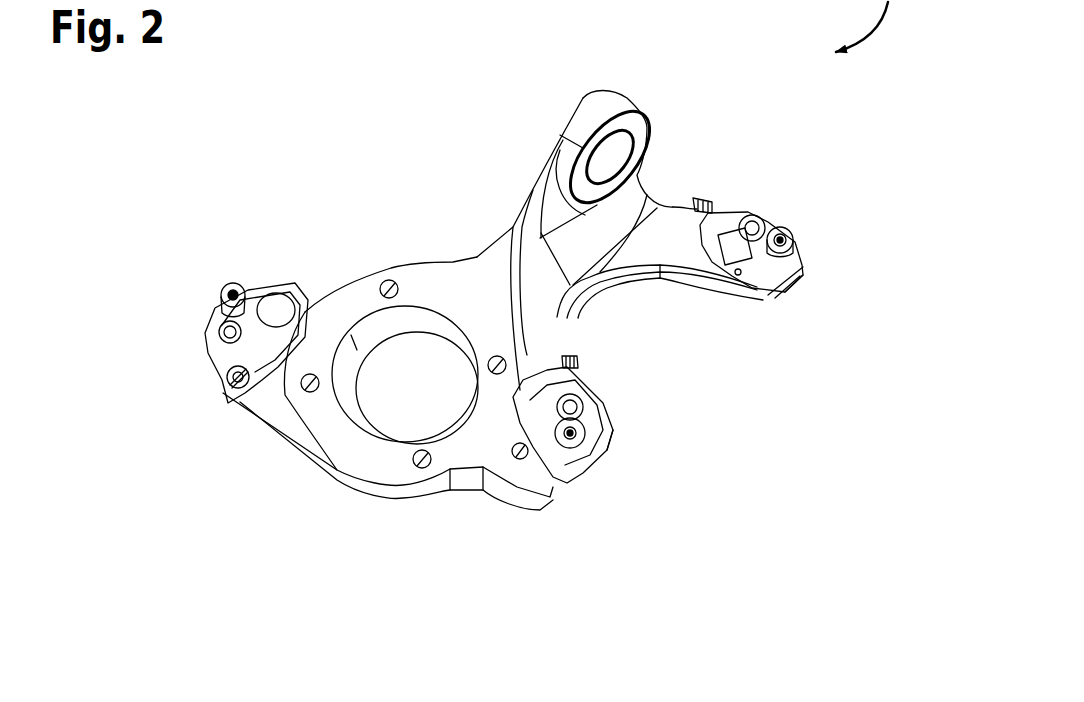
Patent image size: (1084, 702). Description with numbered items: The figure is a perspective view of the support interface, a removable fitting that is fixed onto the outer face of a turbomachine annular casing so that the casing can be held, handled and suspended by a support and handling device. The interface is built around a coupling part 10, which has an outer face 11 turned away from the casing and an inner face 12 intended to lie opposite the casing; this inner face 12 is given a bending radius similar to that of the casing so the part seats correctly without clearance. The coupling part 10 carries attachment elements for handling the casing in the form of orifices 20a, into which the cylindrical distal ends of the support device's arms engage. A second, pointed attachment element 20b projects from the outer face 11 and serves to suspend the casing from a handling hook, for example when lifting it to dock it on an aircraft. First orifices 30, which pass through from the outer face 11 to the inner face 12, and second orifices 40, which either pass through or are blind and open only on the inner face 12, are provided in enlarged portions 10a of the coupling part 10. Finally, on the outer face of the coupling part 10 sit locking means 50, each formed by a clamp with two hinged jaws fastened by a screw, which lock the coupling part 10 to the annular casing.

The coupling part 10 is at (434, 282).
The enlarged portions 10a is at (765, 280).
The outer face 11 is at (342, 316).
The inner face 12 is at (690, 300).
The orifices 20a is at (410, 397).
The second attachment element 20b is at (597, 117).
The first orifices 30 is at (757, 222).
The second orifices 40 is at (278, 312).
The locking means 50 is at (190, 309).